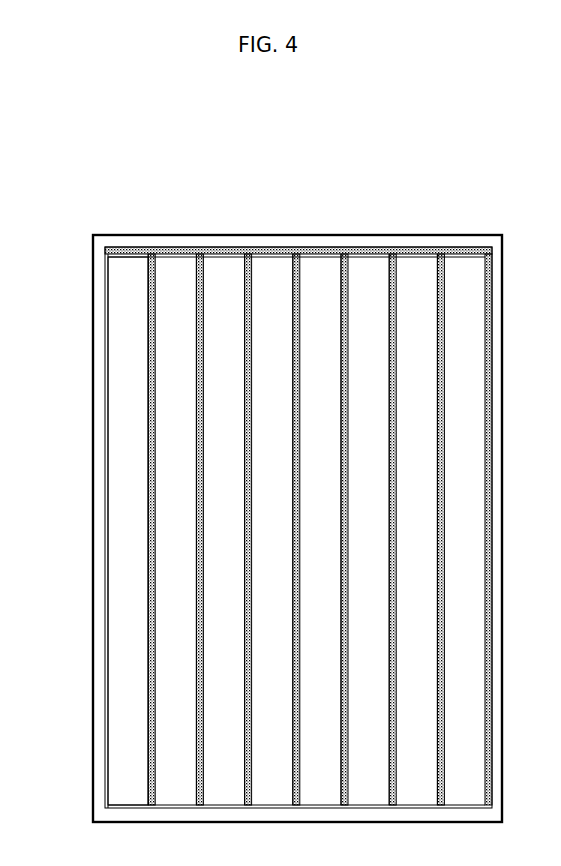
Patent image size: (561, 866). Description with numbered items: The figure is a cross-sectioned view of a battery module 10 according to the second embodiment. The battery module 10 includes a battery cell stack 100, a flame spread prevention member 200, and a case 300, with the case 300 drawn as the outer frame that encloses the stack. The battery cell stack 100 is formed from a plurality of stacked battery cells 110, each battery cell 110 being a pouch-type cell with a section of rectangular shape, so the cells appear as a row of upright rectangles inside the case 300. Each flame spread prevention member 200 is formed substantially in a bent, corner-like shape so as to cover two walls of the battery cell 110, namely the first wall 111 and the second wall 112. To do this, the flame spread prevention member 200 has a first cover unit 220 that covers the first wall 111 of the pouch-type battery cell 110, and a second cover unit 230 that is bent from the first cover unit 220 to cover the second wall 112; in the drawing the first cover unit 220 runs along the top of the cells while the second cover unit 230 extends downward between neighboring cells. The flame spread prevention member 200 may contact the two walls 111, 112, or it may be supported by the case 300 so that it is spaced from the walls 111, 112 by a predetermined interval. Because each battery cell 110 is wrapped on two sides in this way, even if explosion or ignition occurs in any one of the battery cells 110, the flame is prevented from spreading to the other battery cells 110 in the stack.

The battery module 10 is at (145, 121).
The battery cell stack 100 is at (263, 474).
The battery cell 110 is at (127, 372).
The first wall 111 is at (131, 257).
The second wall 112 is at (148, 312).
The flame spread prevention member 200 is at (197, 192).
The first cover unit 220 is at (124, 250).
The second cover unit 230 is at (151, 282).
The case 300 is at (386, 235).